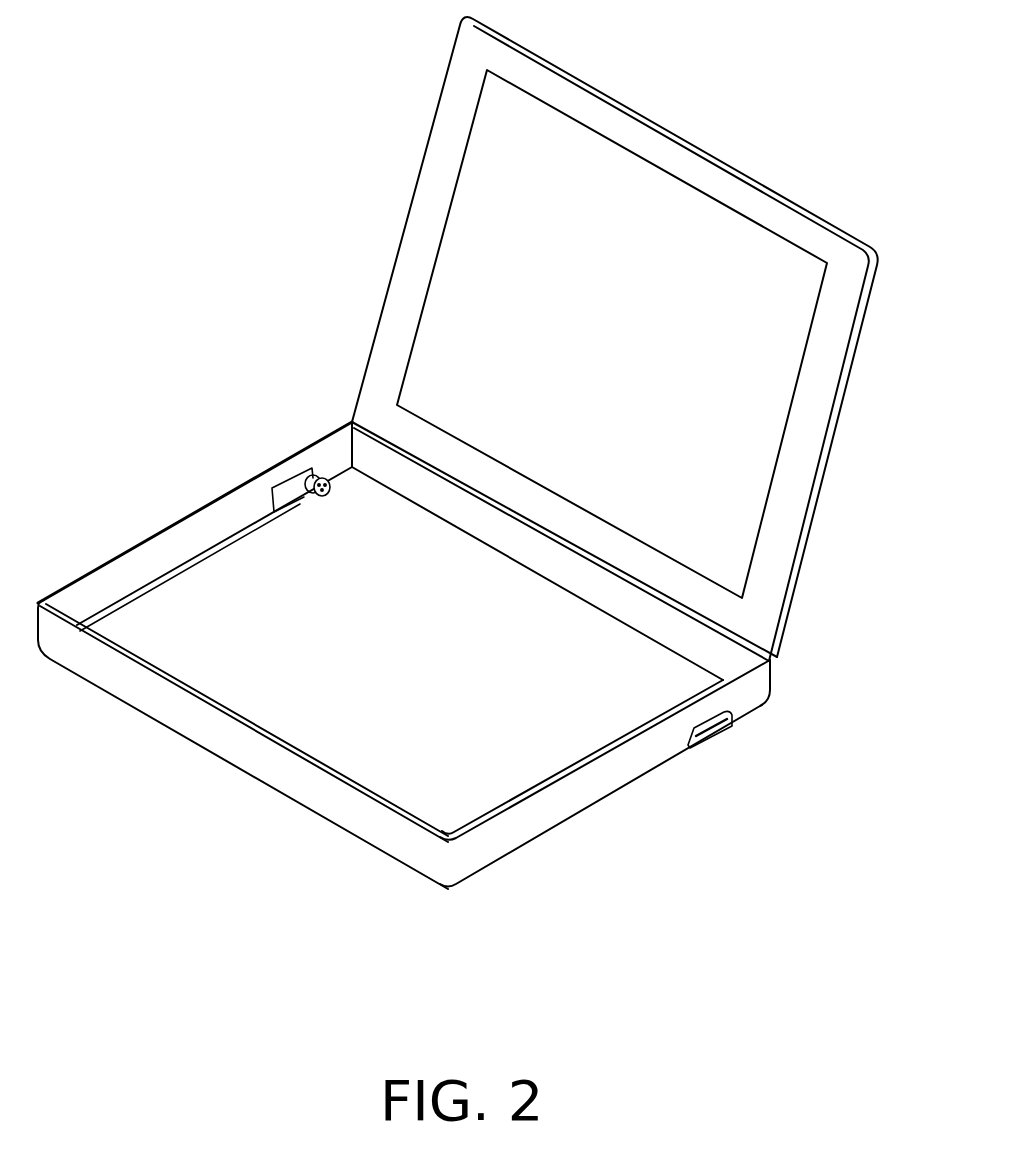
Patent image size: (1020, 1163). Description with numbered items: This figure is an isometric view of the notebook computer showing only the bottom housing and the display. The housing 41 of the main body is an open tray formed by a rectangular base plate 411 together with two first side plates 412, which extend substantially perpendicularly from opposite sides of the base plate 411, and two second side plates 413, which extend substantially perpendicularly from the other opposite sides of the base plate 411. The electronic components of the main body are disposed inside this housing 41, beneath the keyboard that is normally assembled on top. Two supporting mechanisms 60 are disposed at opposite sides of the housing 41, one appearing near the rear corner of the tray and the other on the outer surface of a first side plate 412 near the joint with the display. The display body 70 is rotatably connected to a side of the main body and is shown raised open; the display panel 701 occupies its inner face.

The housing 41 is at (404, 715).
The base plate 411 is at (507, 795).
The first side plate 412 is at (582, 960).
The second side plate 413 is at (408, 855).
The supporting mechanism 60 is at (329, 468).
The display body 70 is at (610, 115).
The display screen 701 is at (475, 207).